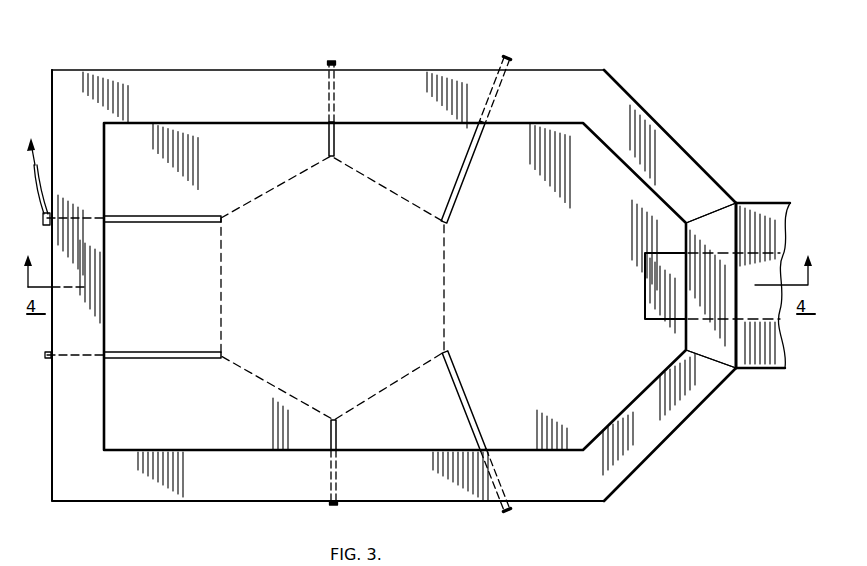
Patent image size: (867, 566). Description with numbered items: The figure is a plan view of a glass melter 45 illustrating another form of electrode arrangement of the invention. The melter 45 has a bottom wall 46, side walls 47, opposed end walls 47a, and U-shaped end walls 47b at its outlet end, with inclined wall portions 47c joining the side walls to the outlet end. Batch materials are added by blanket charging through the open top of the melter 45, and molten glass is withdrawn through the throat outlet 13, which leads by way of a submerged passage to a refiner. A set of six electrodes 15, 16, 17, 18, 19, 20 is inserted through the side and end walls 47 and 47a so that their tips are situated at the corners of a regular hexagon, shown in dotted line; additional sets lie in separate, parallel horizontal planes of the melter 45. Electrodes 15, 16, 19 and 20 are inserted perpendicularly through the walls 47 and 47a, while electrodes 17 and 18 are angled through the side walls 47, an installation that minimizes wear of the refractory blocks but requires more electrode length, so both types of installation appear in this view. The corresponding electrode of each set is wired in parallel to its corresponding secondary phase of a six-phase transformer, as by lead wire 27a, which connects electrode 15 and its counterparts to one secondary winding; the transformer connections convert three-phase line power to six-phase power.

The throat outlet 13 is at (662, 262).
The electrode 15 is at (214, 215).
The electrode 16 is at (334, 147).
The electrode 17 is at (457, 193).
The electrode 18 is at (456, 367).
The electrode 19 is at (338, 424).
The electrode 20 is at (214, 352).
The lead wire 27a is at (37, 163).
The melter 45 is at (603, 56).
The bottom wall 46 is at (607, 172).
The side walls 47 is at (549, 76).
The end walls 47a is at (67, 84).
The U-shaped end walls 47b is at (730, 226).
The inclined wall 47c is at (676, 152).